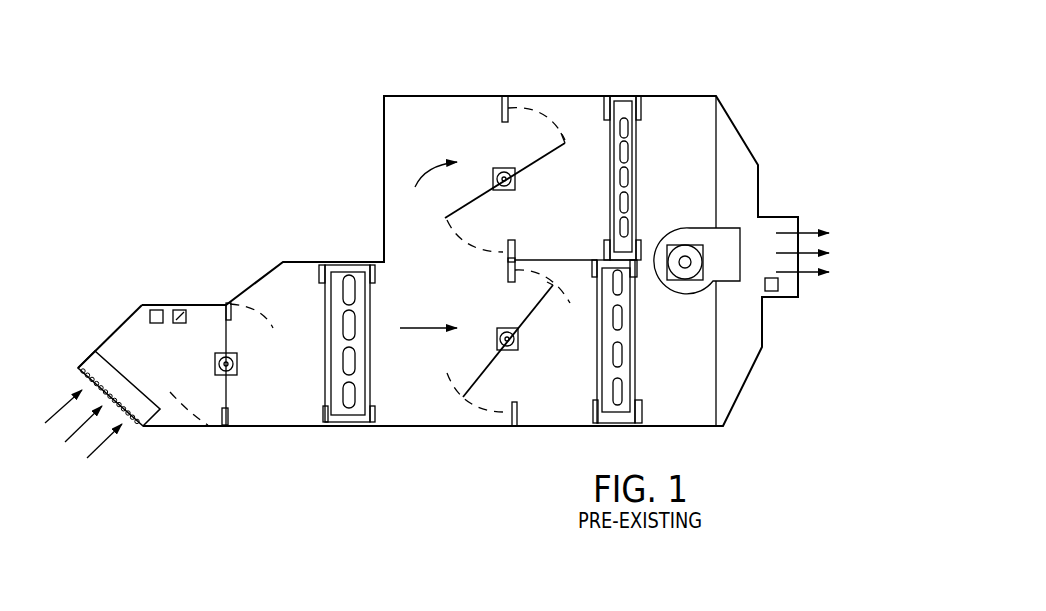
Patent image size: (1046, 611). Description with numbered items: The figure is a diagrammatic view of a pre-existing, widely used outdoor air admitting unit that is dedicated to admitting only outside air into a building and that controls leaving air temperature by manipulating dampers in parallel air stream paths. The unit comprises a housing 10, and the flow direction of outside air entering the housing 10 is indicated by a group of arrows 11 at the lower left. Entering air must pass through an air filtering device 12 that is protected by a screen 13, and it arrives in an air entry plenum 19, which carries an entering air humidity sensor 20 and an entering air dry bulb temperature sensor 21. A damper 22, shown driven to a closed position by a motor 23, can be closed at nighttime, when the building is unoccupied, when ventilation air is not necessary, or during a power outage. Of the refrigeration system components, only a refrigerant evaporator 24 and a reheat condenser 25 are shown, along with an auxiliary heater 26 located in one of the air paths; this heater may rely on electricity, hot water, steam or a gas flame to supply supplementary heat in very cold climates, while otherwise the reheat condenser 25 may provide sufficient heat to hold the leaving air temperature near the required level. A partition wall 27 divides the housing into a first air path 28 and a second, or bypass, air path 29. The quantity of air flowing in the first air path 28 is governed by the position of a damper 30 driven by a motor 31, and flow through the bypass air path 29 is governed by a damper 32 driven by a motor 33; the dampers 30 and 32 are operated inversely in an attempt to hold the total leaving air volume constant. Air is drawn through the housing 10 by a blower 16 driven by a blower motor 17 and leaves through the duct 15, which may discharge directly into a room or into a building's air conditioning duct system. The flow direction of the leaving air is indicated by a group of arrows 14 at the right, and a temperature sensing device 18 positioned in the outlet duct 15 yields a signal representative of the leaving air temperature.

The housing 10 is at (348, 172).
The arrows indicating entering outside air flow direction 11 is at (106, 458).
The air filtering device 12 is at (107, 372).
The screen 13 is at (79, 383).
The arrows indicating leaving air flow direction 14 is at (812, 287).
The duct 15 is at (768, 237).
The blower 16 is at (687, 225).
The blower motor 17 is at (690, 280).
The temperature sensing device 18 is at (765, 285).
The air entry plenum 19 is at (132, 338).
The entering air humidity sensor 20 is at (157, 310).
The entering air dry bulb temperature sensor 21 is at (182, 310).
The damper 22 is at (226, 338).
The motor 23 is at (237, 372).
The refrigerant evaporator 24 is at (362, 315).
The reheat condenser 25 is at (628, 345).
The auxiliary heater 26 is at (633, 132).
The partition wall 27 is at (572, 260).
The first air path 28 is at (436, 333).
The second air path 29 is at (428, 164).
The damper 30 is at (514, 342).
The motor 31 is at (520, 343).
The damper 32 is at (553, 153).
The motor 33 is at (515, 195).